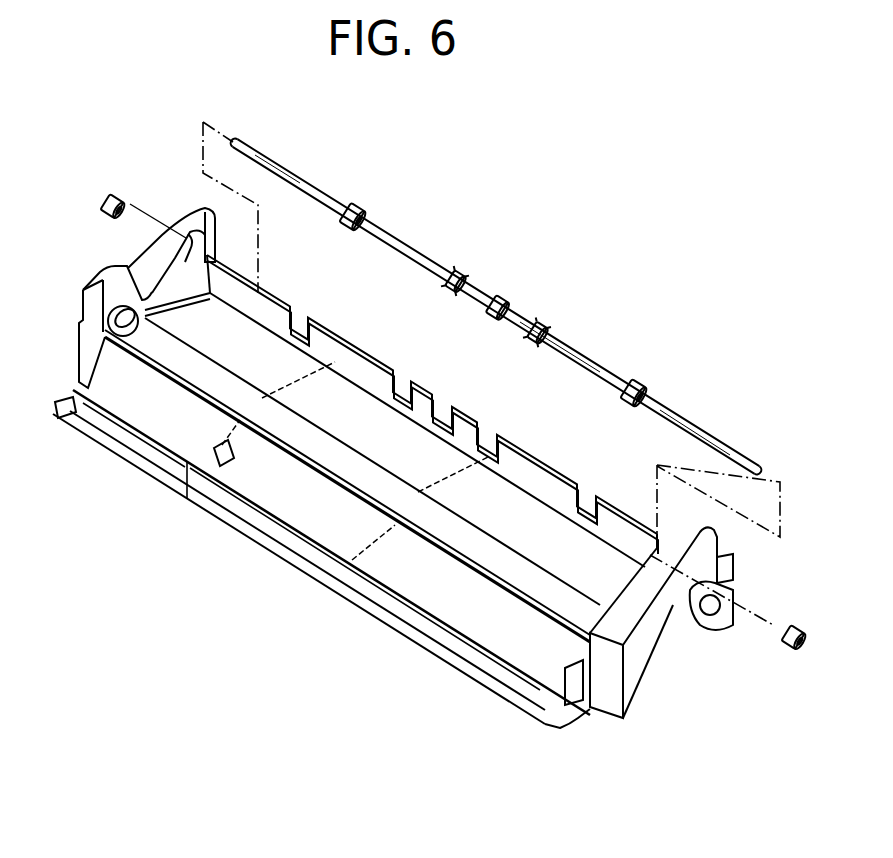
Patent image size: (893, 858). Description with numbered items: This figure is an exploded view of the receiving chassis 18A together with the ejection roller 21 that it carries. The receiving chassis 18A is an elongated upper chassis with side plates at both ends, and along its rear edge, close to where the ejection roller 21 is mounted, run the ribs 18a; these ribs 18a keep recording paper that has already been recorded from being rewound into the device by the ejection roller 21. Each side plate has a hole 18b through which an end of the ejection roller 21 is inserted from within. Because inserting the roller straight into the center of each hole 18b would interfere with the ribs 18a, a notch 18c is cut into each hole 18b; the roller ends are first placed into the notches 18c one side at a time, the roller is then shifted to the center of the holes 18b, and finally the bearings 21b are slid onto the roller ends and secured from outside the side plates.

The ribs 18a is at (270, 300).
The receiving chassis 18A is at (507, 643).
The holes 18b is at (727, 543).
The notches 18c is at (160, 272).
The ejection roller 21 is at (582, 352).
The bearings 21b is at (112, 198).